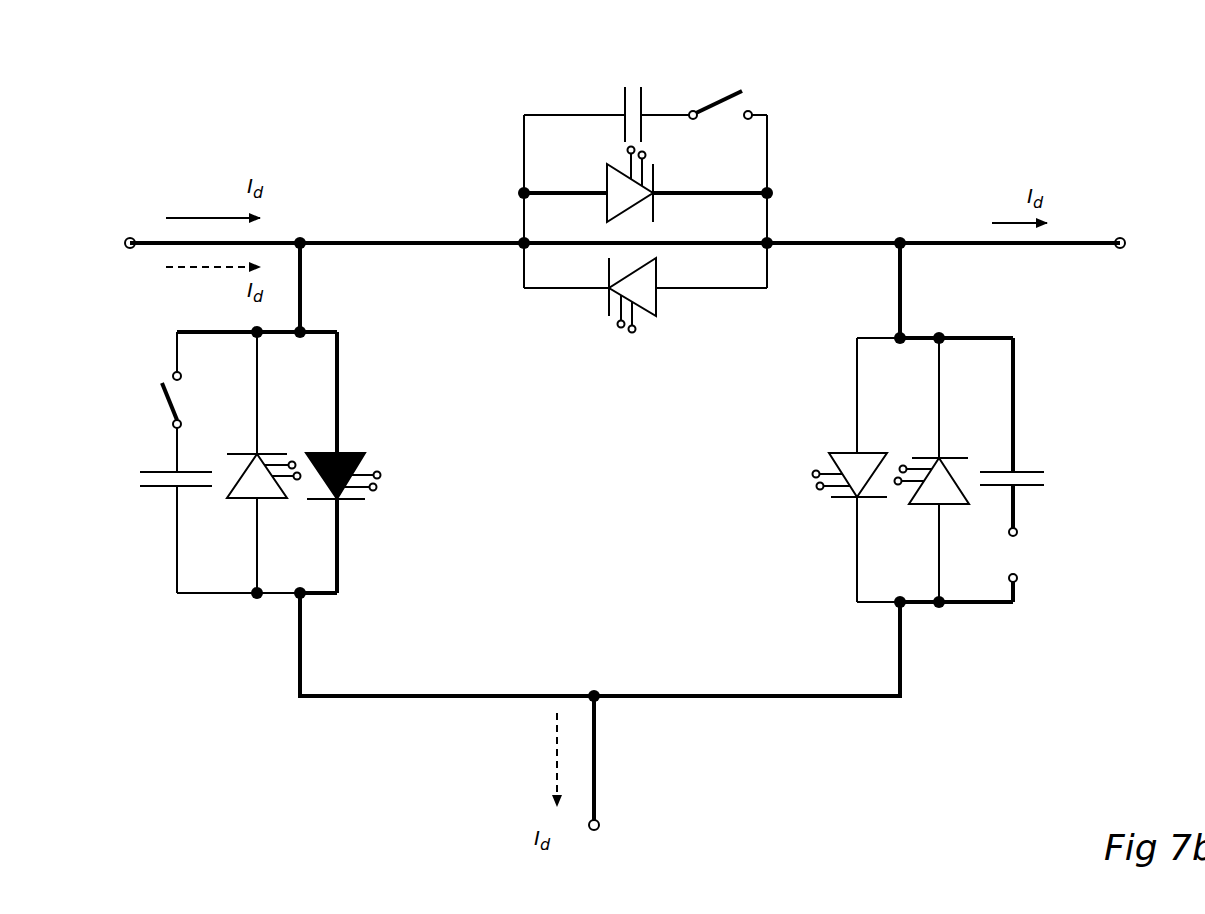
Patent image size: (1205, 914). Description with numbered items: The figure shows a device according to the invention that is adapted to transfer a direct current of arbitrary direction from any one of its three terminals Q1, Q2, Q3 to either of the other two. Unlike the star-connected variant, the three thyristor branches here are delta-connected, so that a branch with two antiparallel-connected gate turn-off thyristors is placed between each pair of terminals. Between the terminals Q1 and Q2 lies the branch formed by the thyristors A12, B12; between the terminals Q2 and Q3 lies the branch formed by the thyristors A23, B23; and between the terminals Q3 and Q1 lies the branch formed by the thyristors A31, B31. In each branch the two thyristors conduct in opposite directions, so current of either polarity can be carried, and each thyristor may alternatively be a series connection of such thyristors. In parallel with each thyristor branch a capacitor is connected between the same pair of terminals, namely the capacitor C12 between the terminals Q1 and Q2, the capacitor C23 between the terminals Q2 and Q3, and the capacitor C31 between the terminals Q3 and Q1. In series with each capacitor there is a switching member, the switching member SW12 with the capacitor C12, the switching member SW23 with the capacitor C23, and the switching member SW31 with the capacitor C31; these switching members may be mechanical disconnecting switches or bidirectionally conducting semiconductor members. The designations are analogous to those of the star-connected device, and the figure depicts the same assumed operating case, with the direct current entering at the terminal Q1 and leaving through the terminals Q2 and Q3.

The terminal Q1 is at (123, 228).
The terminal Q2 is at (1125, 232).
The terminal Q3 is at (610, 825).
The capacitor C12 is at (635, 75).
The switching member SW12 is at (733, 82).
The gate turn-off thyristor A12 is at (660, 175).
The gate turn-off thyristor B12 is at (632, 310).
The switching member SW31 is at (150, 403).
The capacitor C31 is at (137, 482).
The gate turn-off thyristor A31 is at (242, 508).
The gate turn-off thyristor B31 is at (357, 505).
The gate turn-off thyristor A23 is at (805, 502).
The gate turn-off thyristor B23 is at (948, 445).
The capacitor C23 is at (1053, 480).
The switching member SW23 is at (1028, 558).